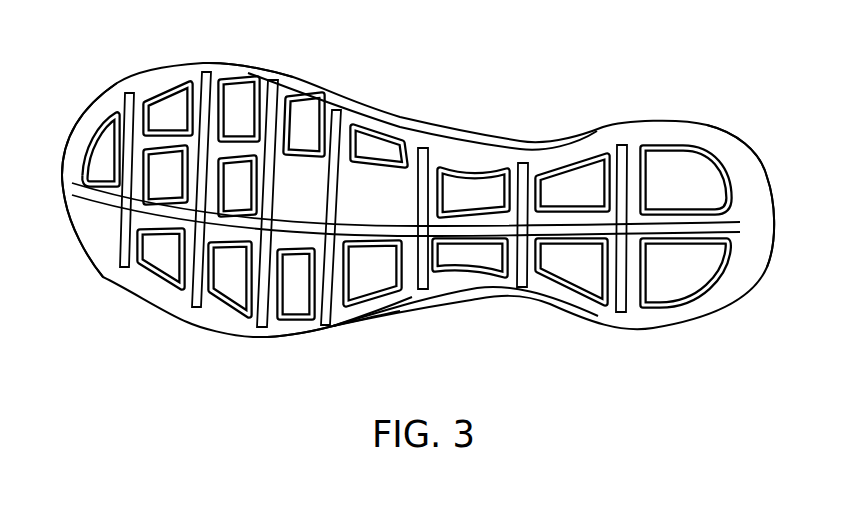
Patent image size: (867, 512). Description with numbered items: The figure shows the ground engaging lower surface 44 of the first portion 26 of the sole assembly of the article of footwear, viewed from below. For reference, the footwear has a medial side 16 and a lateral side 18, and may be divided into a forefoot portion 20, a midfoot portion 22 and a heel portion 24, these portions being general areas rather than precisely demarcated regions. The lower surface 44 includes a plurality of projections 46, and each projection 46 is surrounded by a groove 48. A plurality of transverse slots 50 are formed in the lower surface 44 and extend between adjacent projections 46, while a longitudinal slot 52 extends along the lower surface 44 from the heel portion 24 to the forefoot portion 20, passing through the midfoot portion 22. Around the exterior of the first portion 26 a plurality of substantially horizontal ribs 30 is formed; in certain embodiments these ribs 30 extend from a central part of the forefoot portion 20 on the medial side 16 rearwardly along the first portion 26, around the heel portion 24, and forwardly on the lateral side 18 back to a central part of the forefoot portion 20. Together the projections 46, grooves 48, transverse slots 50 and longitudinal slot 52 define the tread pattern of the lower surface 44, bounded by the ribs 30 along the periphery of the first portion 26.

The medial side 16 is at (443, 124).
The lateral side 18 is at (334, 326).
The forefoot portion 20 is at (97, 233).
The midfoot portion 22 is at (388, 150).
The heel portion 24 is at (708, 142).
The first portion 26 is at (657, 132).
The ribs 30 is at (493, 143).
The ground engaging lower surface 44 is at (240, 74).
The projections 46 is at (363, 143).
The groove 48 is at (298, 156).
The transverse slots 50 is at (412, 295).
The longitudinal slot 52 is at (472, 227).